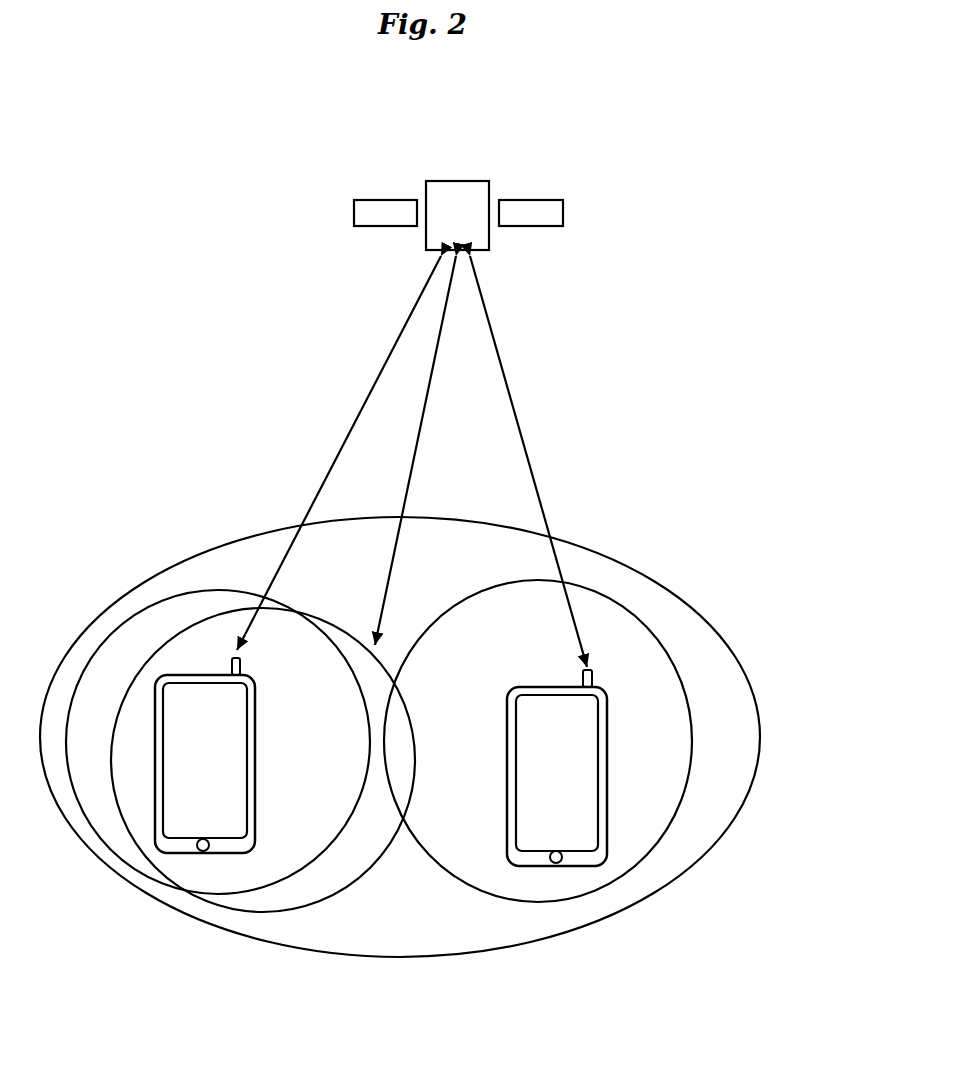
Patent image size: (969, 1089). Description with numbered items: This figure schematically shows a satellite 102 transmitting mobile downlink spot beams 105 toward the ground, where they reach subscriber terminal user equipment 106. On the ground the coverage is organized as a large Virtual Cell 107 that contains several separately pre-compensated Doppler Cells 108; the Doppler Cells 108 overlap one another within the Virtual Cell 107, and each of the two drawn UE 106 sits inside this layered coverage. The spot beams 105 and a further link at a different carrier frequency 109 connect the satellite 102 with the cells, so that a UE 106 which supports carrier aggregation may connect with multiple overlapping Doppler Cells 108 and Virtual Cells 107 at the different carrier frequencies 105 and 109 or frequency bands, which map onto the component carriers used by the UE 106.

The satellite 102 is at (458, 181).
The mobile downlink spot beam 105 is at (333, 483).
The user equipment 106 is at (162, 732).
The Virtual Cell 107 is at (601, 552).
The Doppler Cell 108 is at (291, 606).
The carrier frequency 109 is at (415, 486).